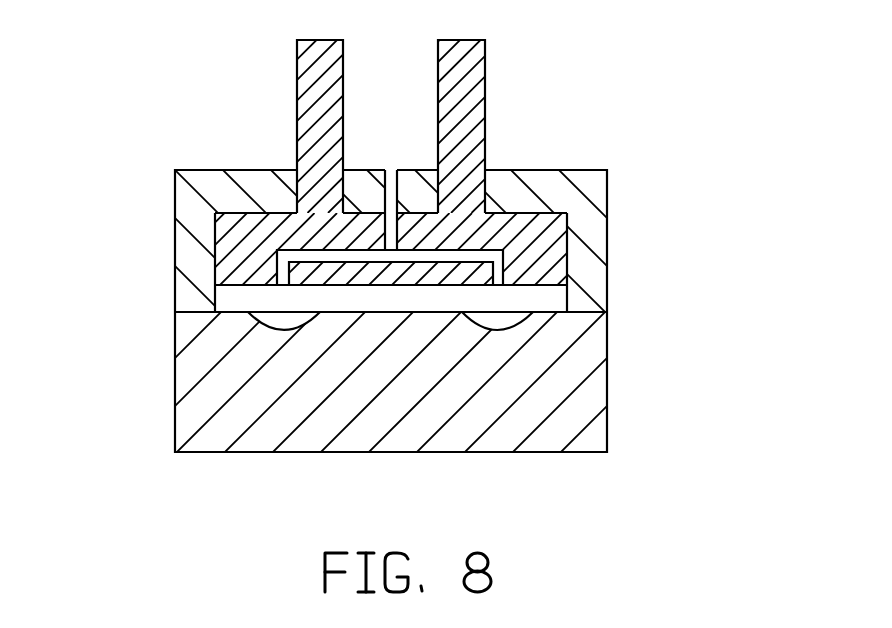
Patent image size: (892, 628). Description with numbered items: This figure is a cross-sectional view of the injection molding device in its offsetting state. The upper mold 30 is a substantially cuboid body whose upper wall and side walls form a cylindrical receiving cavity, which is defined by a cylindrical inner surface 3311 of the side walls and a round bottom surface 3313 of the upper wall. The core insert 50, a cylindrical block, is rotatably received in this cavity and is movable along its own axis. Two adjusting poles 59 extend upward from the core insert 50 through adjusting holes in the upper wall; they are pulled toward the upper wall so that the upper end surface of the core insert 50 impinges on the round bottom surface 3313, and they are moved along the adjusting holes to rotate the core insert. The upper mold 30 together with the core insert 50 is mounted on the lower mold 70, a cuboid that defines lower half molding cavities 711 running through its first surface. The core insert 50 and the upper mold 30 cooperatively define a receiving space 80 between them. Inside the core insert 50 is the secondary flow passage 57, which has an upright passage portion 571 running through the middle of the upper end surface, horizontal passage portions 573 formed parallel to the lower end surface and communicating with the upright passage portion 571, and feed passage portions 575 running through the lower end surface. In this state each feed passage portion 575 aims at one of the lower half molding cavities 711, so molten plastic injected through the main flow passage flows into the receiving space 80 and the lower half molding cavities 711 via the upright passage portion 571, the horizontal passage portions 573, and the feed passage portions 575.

The upper mold 30 is at (414, 209).
The cylindrical inner surface 3311 is at (568, 250).
The round bottom surface 3313 is at (527, 212).
The core insert 50 is at (550, 268).
The secondary flow passage 57 is at (265, 244).
The upright passage portion 571 is at (390, 223).
The horizontal passage portion 573 is at (308, 256).
The feed passage portion 575 is at (283, 277).
The adjusting pole 59 is at (467, 62).
The lower mold 70 is at (397, 382).
The lower half molding cavity 711 is at (505, 320).
The receiving space 80 is at (240, 300).